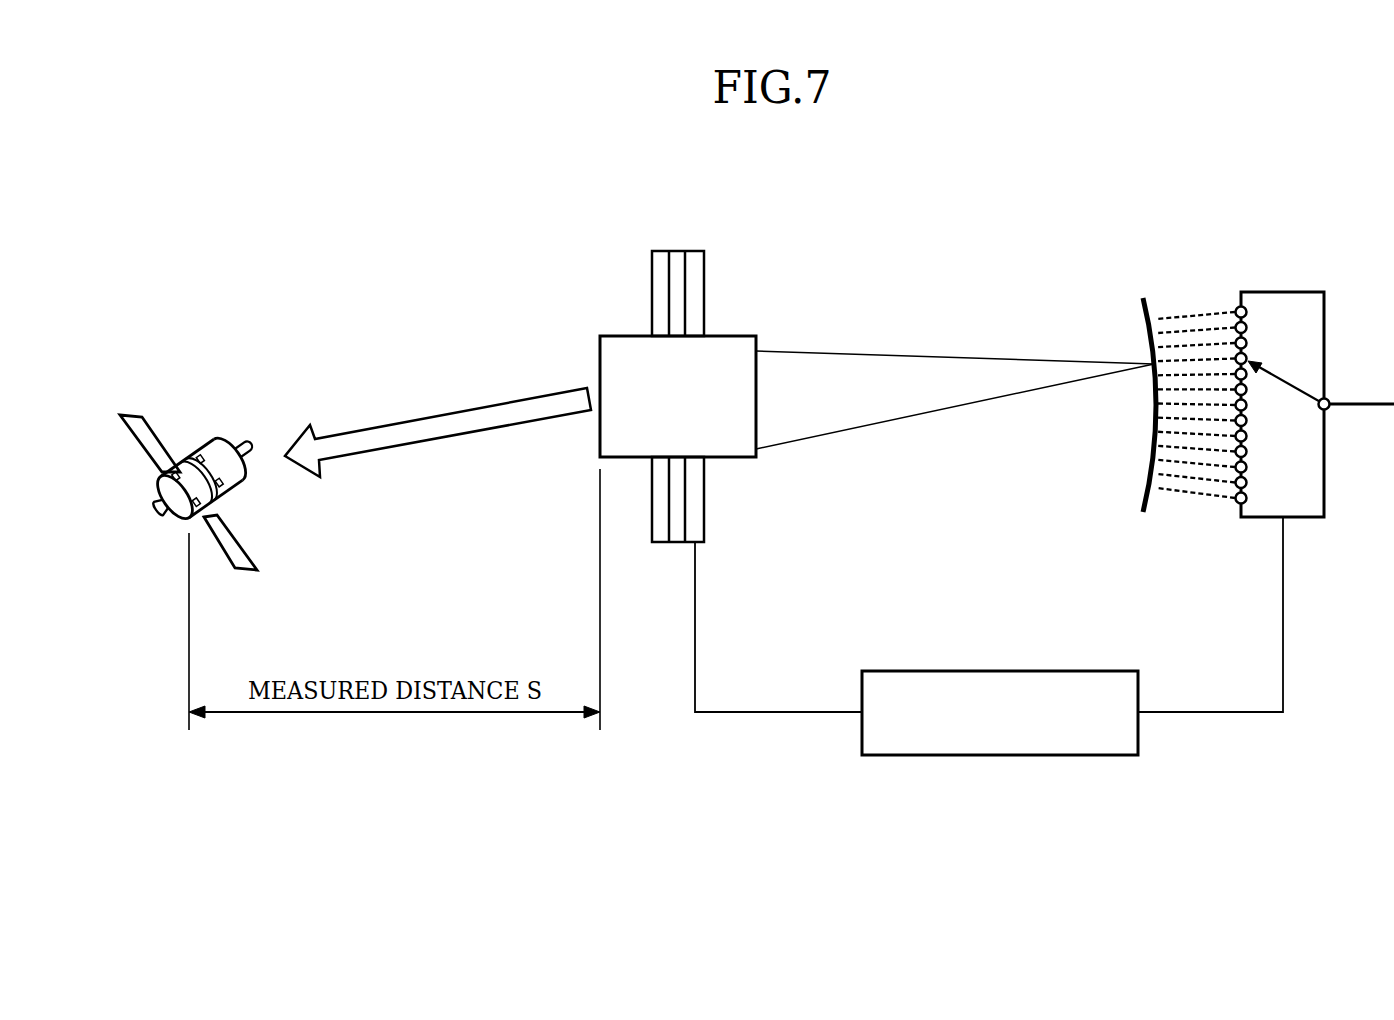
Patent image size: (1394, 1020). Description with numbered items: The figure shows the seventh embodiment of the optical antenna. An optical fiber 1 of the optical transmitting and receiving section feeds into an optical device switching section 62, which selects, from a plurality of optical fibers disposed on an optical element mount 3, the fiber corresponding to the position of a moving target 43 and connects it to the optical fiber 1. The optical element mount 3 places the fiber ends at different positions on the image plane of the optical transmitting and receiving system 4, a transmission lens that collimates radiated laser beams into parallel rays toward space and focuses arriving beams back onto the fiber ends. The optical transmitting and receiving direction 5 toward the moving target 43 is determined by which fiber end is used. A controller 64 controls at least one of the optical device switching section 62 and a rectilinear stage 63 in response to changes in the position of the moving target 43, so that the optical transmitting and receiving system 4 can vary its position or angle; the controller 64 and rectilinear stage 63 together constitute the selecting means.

The optical fiber 1 is at (1379, 400).
The optical element mount 3 is at (1143, 298).
The optical transmitting and receiving system 4 is at (745, 335).
The optical transmitting and receiving direction 5 is at (433, 416).
The moving target 43 is at (142, 415).
The optical device switching section 62 is at (1285, 292).
The rectilinear stage 63 is at (695, 251).
The controller 64 is at (1065, 671).